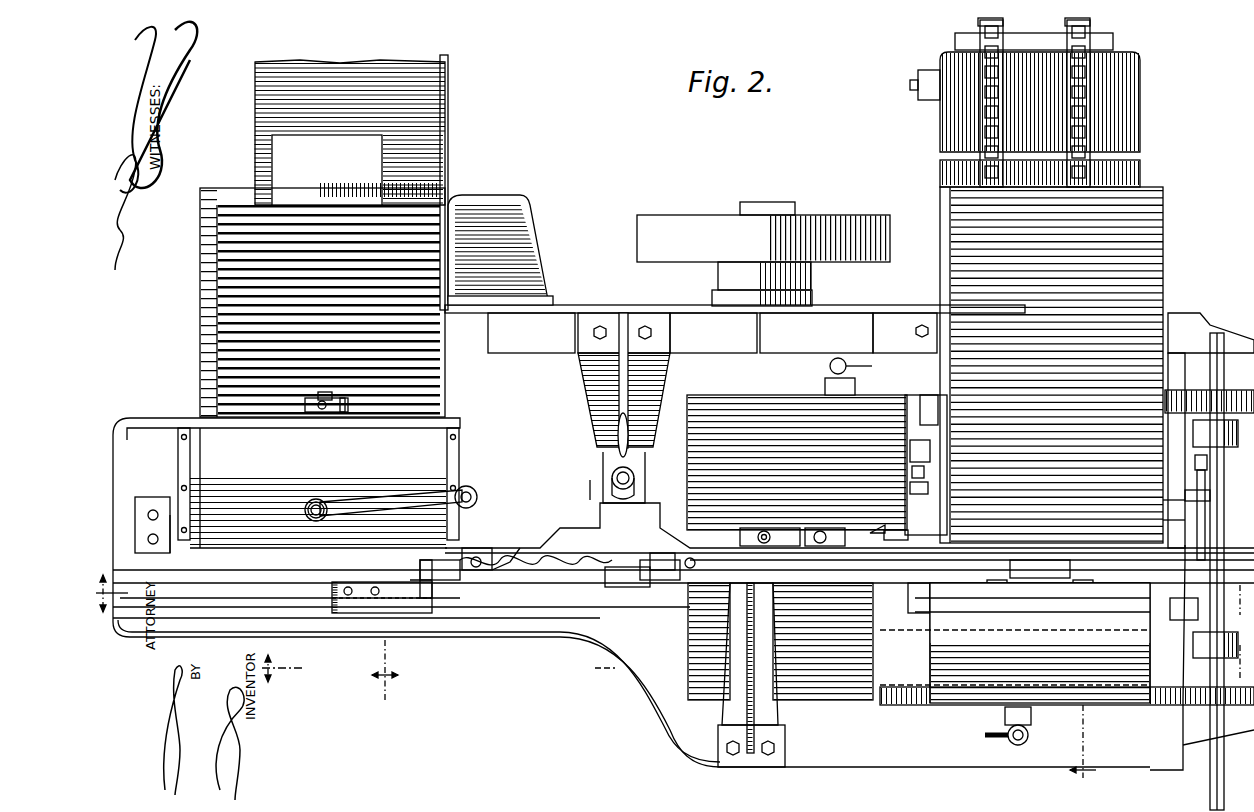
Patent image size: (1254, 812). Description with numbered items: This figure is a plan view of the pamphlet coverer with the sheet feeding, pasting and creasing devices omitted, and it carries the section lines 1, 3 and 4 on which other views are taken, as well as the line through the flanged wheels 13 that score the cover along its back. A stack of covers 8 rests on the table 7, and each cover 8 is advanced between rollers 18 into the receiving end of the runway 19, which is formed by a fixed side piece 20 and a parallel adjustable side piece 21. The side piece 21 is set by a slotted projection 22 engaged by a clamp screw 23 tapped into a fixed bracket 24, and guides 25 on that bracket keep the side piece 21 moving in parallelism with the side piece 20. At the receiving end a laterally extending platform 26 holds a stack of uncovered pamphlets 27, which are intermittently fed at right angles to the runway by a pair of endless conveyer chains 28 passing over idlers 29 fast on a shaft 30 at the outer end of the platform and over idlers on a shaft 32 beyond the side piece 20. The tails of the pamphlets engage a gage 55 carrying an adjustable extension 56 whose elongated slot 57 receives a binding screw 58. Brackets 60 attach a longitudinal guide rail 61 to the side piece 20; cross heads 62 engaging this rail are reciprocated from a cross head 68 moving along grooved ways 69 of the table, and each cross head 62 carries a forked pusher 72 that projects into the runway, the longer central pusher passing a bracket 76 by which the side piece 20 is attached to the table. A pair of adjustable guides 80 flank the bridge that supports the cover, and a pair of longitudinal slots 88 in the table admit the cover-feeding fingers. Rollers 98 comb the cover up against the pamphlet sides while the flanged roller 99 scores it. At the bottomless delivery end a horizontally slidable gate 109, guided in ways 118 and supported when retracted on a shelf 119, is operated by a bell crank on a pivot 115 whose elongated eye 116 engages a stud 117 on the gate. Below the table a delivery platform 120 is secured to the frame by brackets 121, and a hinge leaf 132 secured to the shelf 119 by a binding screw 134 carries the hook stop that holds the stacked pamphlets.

The section line 1 is at (275, 667).
The section line 3 is at (1093, 404).
The section line 4 is at (665, 627).
The table 7 is at (600, 637).
The cover 8 is at (695, 620).
The flanged wheels 13 is at (390, 52).
The rollers 18 is at (1238, 447).
The runway 19 is at (808, 545).
The fixed side piece 20 is at (890, 562).
The adjustable side piece 21 is at (878, 516).
The slotted projection 22 is at (849, 528).
The clamp screw 23 is at (612, 478).
The fixed bracket 24 is at (652, 398).
The guides 25 is at (645, 482).
The platform 26 is at (1130, 122).
The uncovered pamphlets 27 is at (1150, 215).
The endless conveyer chains 28 is at (985, 128).
The idlers 29 is at (978, 24).
The shaft 30 is at (1045, 30).
The shaft 32 is at (1030, 615).
The gage 55 is at (942, 262).
The adjustable extension 56 is at (940, 425).
The elongated slot 57 is at (920, 487).
The binding screw 58 is at (912, 472).
The brackets 60 is at (1185, 588).
The longitudinal guide rail 61 is at (862, 575).
The cross heads 62 is at (652, 572).
The cross head 68 is at (400, 598).
The grooved ways 69 is at (318, 592).
The pusher 72 is at (660, 548).
The bracket 76 is at (735, 655).
The adjustable guides 80 is at (1232, 402).
The longitudinal slots 88 is at (882, 640).
The rollers 98 is at (487, 508).
The roller 99 is at (495, 572).
The gate 109 is at (240, 490).
The pivot 115 is at (472, 492).
The elongated eye 116 is at (322, 500).
The stud 117 is at (312, 500).
The ways 118 is at (178, 466).
The shelf 119 is at (205, 447).
The delivery platform 120 is at (425, 162).
The brackets 121 is at (512, 220).
The hinge leaf 132 is at (325, 412).
The binding screw 134 is at (348, 406).